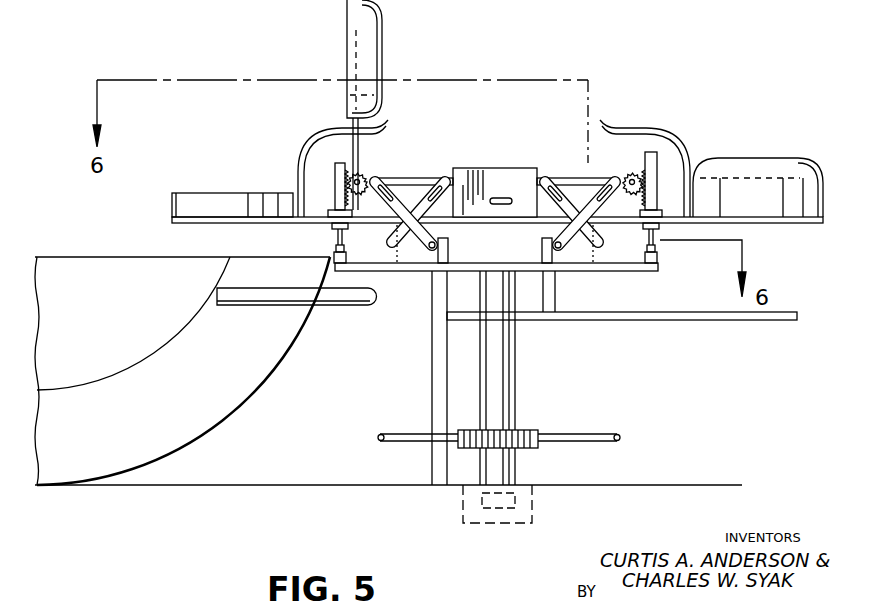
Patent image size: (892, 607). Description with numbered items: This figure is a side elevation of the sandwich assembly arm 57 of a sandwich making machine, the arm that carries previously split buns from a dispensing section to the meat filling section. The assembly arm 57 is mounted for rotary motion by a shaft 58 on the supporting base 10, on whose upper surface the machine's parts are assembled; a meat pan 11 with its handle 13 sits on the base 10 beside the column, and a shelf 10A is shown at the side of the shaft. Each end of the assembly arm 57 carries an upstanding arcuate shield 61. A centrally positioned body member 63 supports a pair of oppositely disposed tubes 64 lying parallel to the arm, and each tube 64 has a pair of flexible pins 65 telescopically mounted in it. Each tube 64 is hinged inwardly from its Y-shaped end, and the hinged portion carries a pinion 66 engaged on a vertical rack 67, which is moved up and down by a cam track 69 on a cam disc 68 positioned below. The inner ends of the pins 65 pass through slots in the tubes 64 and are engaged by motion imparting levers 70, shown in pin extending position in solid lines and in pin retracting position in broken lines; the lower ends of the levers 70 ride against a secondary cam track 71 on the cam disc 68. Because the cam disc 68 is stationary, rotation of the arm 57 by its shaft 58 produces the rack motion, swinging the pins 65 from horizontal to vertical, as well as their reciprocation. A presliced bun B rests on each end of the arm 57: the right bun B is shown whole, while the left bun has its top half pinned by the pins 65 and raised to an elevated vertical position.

The support base 10 is at (300, 485).
The shelf 10A is at (655, 321).
The meat pan 11 is at (135, 314).
The handle 13 is at (360, 306).
The assembly arm 57 is at (312, 223).
The shaft 58 is at (497, 390).
The arcuate shield 61 is at (390, 126).
The body member 63 is at (505, 180).
The tube 64 is at (413, 177).
The flexible pin 65 is at (352, 70).
The pinion 66 is at (364, 176).
The vertical rack 67 is at (337, 186).
The cam disc 68 is at (414, 271).
The cam track 69 is at (659, 253).
The motion imparting lever 70 is at (391, 210).
The secondary cam track 71 is at (448, 252).
The bun B is at (215, 193).